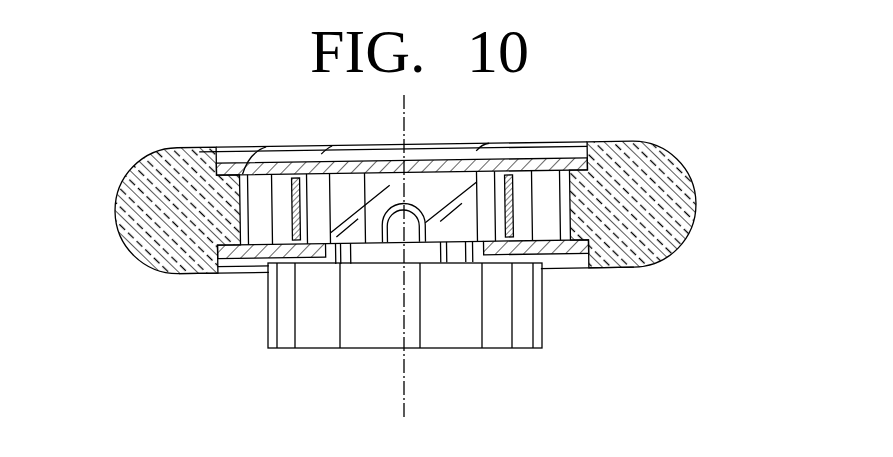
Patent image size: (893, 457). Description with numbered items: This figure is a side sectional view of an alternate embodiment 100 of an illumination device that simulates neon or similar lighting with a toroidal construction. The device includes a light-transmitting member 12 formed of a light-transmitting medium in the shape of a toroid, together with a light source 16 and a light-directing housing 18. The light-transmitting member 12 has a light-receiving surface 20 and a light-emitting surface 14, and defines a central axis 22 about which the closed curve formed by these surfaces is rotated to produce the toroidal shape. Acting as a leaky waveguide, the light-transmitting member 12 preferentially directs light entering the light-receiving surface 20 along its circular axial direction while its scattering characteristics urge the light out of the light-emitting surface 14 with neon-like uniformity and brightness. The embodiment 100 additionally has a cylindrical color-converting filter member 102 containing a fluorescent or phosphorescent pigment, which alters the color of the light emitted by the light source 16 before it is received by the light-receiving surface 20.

The embodiment 100 is at (98, 112).
The light-transmitting member 12 is at (675, 167).
The light-emitting surface 14 is at (693, 183).
The light-receiving surface 20 is at (583, 213).
The light-directing housing 18 is at (535, 160).
The cylindrical color-converting filter member 102 is at (287, 210).
The light source 16 is at (388, 232).
The central axis 22 is at (407, 397).